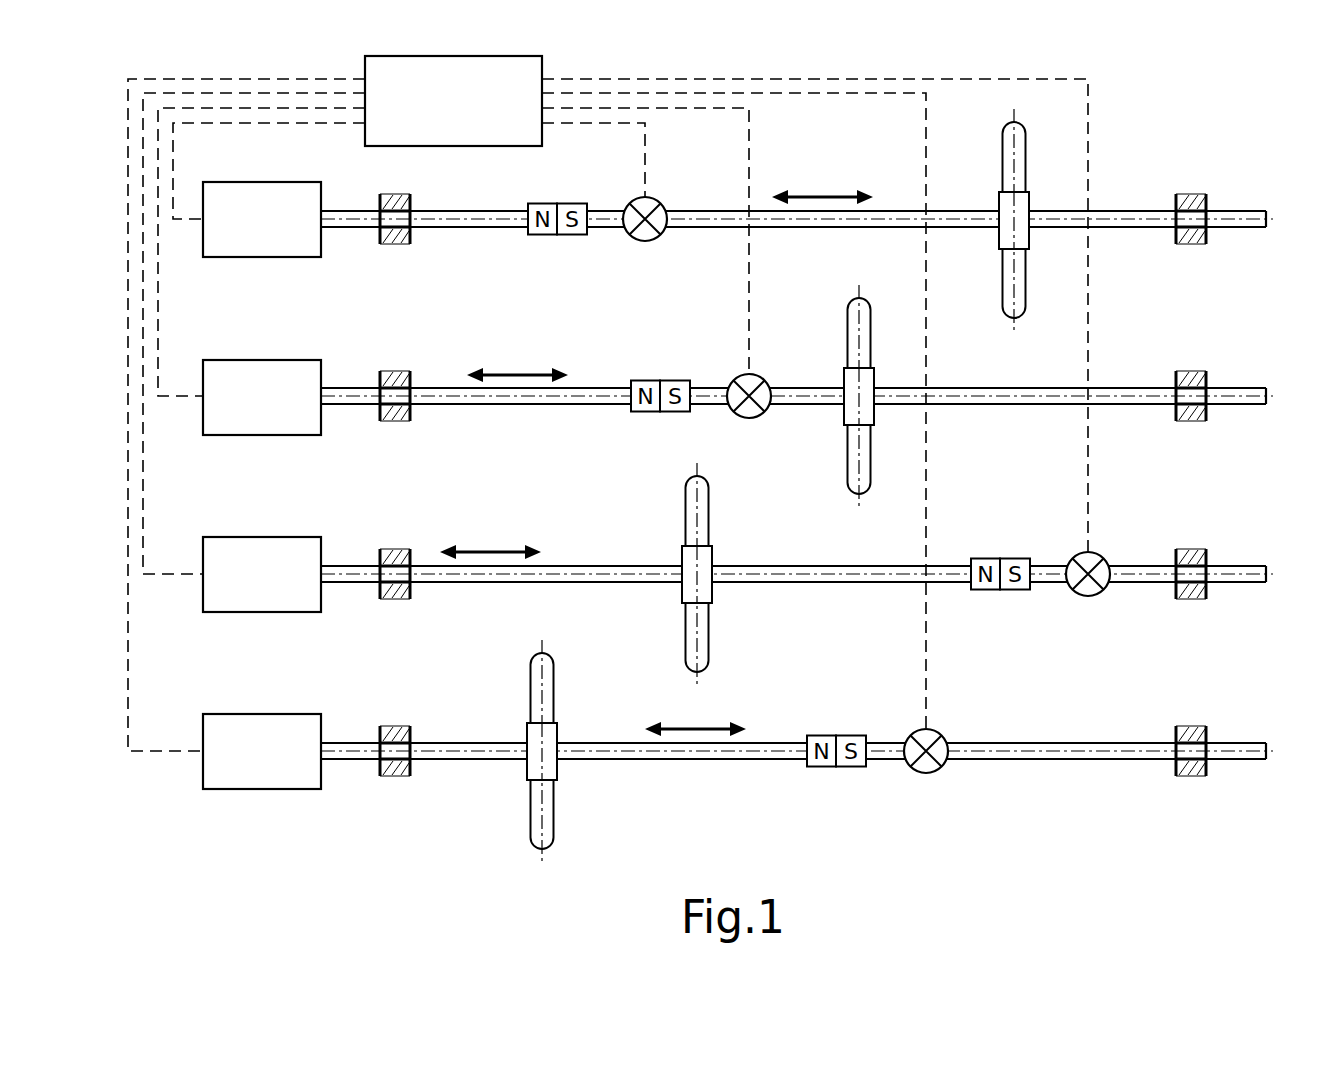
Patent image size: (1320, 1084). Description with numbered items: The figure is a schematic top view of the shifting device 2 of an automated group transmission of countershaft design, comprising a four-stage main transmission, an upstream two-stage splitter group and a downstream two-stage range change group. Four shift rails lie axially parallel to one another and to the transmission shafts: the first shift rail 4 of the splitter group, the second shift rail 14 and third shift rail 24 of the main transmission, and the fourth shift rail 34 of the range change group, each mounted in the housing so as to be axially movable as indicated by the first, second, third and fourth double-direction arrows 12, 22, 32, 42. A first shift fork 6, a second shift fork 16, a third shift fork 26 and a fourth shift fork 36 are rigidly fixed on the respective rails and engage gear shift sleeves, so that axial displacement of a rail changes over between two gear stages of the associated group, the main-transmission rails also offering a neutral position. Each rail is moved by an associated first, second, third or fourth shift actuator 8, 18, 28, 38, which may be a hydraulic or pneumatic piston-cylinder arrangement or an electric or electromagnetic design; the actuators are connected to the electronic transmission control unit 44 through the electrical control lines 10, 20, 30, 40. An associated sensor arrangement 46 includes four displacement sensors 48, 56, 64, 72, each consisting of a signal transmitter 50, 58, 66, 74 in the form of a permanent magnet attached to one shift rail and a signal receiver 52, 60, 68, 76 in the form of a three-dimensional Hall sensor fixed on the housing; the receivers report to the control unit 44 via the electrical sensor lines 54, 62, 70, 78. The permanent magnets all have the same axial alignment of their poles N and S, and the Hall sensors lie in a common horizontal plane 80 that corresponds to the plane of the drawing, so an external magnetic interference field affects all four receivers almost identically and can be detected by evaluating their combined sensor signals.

The shifting device 2 is at (1150, 153).
The first shift rail 4 is at (695, 760).
The first shift fork 6 is at (560, 778).
The first shift actuator 8 is at (262, 751).
The first electrical control line 10 is at (128, 657).
The first double-direction arrow 12 is at (700, 727).
The second shift rail 14 is at (493, 583).
The second shift fork 16 is at (681, 592).
The second shift actuator 18 is at (262, 574).
The second electrical control line 20 is at (143, 487).
The second double-direction arrow 22 is at (490, 550).
The third shift rail 24 is at (518, 406).
The third shift fork 26 is at (843, 418).
The third shift actuator 28 is at (262, 397).
The third electrical control line 30 is at (158, 296).
The third double-direction arrow 32 is at (515, 372).
The fourth shift rail 34 is at (823, 229).
The fourth shift fork 36 is at (998, 240).
The fourth shift actuator 38 is at (262, 219).
The fourth electrical control line 40 is at (173, 148).
The fourth double-direction arrow 42 is at (822, 194).
The electronic transmission control unit 44 is at (455, 147).
The sensor arrangement 46 is at (1093, 790).
The first displacement sensor 48 is at (911, 722).
The first signal transmitter 50 is at (837, 767).
The first signal receiver 52 is at (926, 773).
The first electrical sensor line 54 is at (928, 108).
The second displacement sensor 56 is at (1070, 545).
The second signal transmitter 58 is at (1000, 590).
The second signal receiver 60 is at (1088, 596).
The second electrical sensor line 62 is at (1090, 293).
The third displacement sensor 64 is at (731, 368).
The third signal transmitter 66 is at (660, 414).
The third signal receiver 68 is at (749, 420).
The third electrical sensor line 70 is at (752, 136).
The fourth displacement sensor 72 is at (630, 193).
The fourth signal transmitter 74 is at (558, 236).
The fourth signal receiver 76 is at (645, 242).
The fourth electrical sensor line 78 is at (648, 146).
The common plane 80 is at (793, 533).